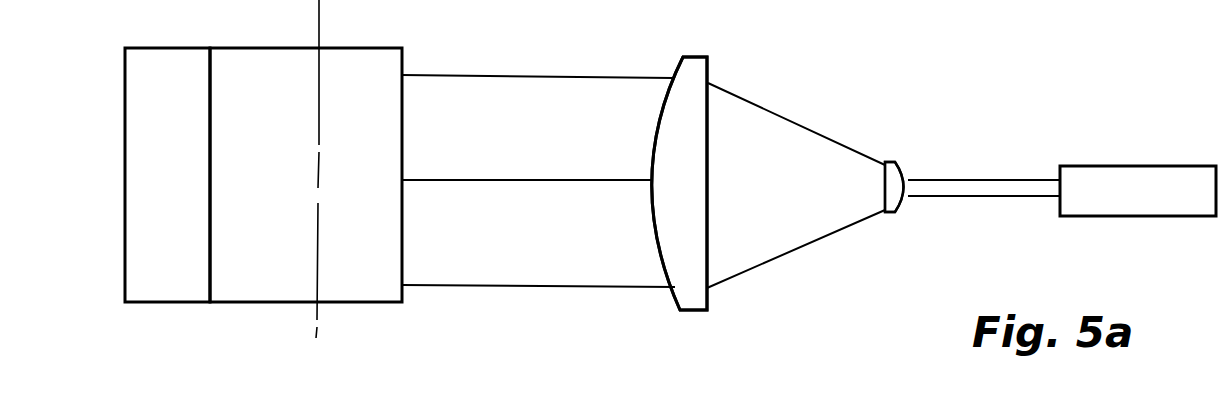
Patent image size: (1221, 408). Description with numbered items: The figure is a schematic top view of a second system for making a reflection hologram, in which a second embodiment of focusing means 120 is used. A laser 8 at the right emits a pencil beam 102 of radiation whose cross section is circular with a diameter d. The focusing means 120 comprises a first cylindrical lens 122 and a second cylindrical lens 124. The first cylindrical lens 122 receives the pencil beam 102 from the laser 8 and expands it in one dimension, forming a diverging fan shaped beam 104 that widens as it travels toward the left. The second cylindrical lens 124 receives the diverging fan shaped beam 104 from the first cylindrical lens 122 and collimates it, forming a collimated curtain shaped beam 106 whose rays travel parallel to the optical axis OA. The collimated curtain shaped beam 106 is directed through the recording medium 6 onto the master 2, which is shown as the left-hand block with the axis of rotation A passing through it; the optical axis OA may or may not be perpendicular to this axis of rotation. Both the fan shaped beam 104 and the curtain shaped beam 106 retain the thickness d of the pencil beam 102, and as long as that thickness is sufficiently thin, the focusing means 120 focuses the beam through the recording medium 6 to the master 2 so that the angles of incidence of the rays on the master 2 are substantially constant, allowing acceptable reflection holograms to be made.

The master 2 is at (171, 161).
The recording medium 6 is at (268, 161).
The laser 8 is at (1143, 166).
The pencil beam 102 is at (1023, 174).
The diverging fan shaped beam 104 is at (797, 262).
The collimated curtain shaped beam 106 is at (514, 296).
The focusing means 120 is at (890, 133).
The first cylindrical lens 122 is at (890, 213).
The second cylindrical lens 124 is at (692, 311).